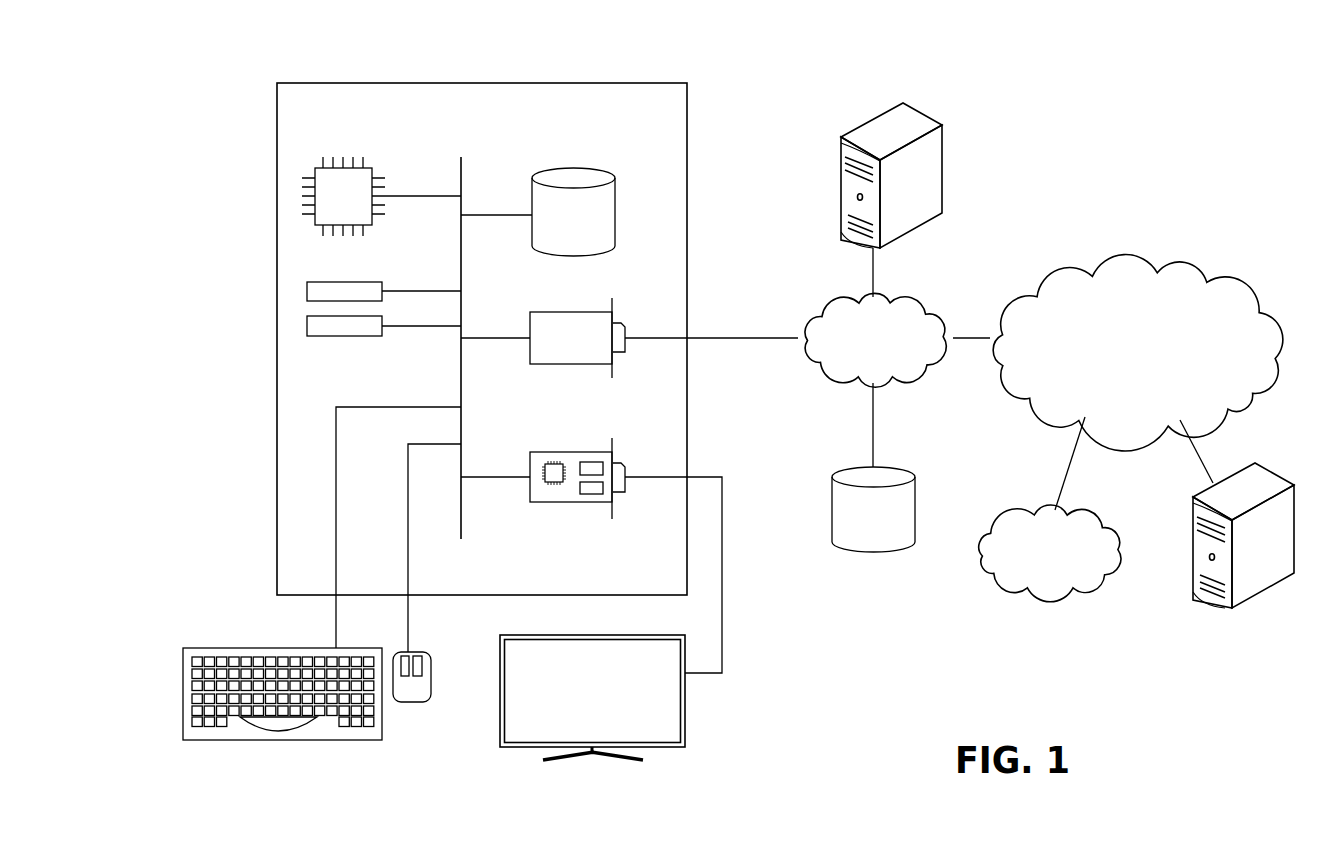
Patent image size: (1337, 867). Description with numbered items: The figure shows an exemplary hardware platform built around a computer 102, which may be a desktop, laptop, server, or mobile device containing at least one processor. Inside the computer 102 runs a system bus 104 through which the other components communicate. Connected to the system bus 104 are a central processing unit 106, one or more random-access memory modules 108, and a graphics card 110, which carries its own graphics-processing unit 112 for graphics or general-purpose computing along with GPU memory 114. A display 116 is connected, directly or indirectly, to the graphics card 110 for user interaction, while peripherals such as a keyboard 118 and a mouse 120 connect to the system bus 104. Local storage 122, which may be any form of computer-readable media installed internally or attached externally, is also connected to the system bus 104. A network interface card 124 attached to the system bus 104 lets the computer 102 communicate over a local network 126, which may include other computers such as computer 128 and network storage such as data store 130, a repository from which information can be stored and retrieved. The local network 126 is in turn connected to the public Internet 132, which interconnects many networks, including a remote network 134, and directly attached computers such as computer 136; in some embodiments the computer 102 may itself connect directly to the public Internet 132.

The computer 102 is at (640, 82).
The system bus 104 is at (462, 170).
The central processing unit 106 is at (367, 168).
The random-access memory modules 108 is at (385, 324).
The graphics card 110 is at (530, 456).
The graphics-processing unit 112 is at (553, 484).
The GPU memory 114 is at (589, 494).
The display 116 is at (687, 727).
The keyboard 118 is at (285, 740).
The mouse 120 is at (408, 702).
The local storage 122 is at (615, 197).
The network interface card 124 is at (530, 313).
The local network 126 is at (923, 297).
The computer 128 is at (923, 113).
The data store 130 is at (905, 465).
The public Internet 132 is at (1177, 262).
The remote network 134 is at (1103, 508).
The computer 136 is at (1272, 465).